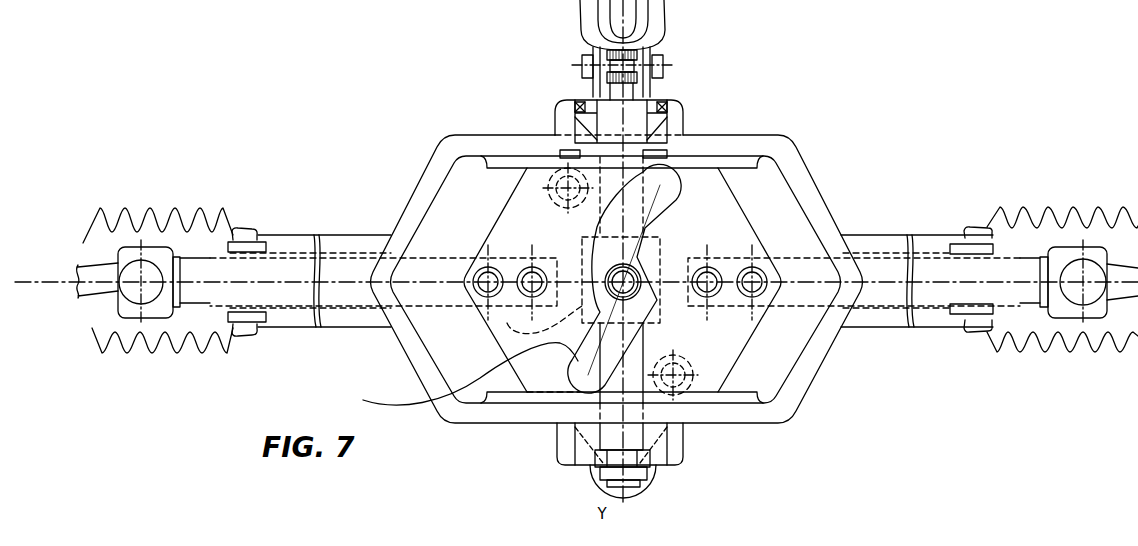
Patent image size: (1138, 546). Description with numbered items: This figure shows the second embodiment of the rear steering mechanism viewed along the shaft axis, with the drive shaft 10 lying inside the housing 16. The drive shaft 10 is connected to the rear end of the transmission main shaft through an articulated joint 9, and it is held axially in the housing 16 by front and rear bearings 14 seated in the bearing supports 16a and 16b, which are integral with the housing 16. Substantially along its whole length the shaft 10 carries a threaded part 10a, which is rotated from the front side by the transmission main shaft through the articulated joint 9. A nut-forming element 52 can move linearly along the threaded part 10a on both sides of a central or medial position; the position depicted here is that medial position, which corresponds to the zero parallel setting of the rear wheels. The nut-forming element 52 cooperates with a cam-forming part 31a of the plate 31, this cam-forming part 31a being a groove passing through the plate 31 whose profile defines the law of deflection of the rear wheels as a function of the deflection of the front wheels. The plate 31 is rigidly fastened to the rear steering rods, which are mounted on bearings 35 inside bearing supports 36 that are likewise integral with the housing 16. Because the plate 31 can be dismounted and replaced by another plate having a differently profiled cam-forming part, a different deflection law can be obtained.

The articulated joint 9 is at (672, 17).
The drive shaft 10 is at (633, 123).
The threaded part 10a is at (647, 233).
The bearings 14 is at (687, 133).
The housing 16 is at (803, 172).
The bearing support 16a is at (563, 116).
The bearing support 16b is at (683, 440).
The plate 31 is at (507, 223).
The cam-forming part 31a is at (470, 374).
The bearings 35 is at (247, 308).
The bearing supports 36 is at (335, 245).
The nut-forming element 52 is at (543, 320).